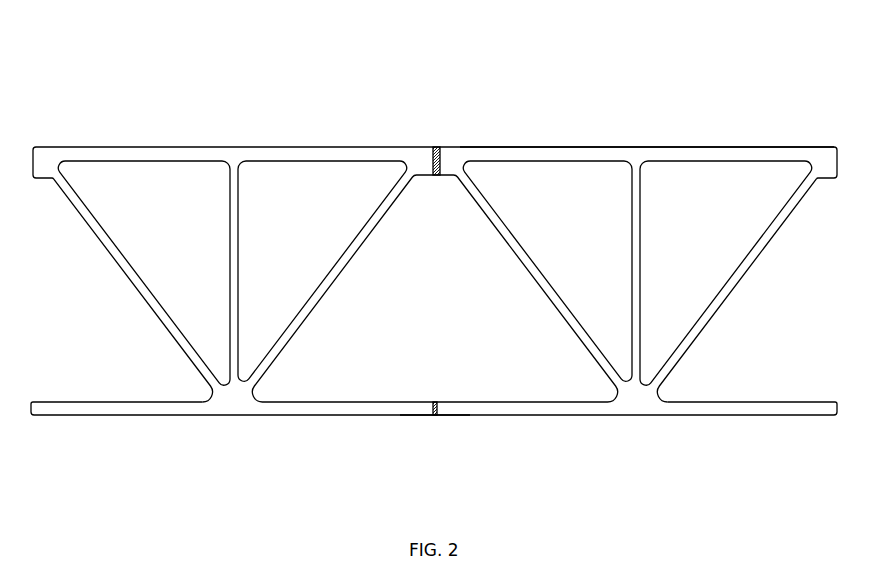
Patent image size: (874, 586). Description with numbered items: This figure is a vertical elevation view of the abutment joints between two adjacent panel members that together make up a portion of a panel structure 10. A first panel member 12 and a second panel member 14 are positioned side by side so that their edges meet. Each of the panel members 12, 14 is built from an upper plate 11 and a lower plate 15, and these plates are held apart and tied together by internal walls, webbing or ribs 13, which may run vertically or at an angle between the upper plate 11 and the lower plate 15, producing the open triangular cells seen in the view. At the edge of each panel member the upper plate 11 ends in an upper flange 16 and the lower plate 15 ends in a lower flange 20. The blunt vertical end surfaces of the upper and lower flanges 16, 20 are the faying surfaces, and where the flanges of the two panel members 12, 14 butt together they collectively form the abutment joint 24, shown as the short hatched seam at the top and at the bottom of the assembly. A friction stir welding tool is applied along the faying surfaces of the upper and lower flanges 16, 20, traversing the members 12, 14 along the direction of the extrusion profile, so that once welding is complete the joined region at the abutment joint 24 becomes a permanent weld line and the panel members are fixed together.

The truss 10 is at (687, 51).
The upper plate 11 is at (573, 147).
The first panel member 12 is at (173, 147).
The internal webbing 13 is at (727, 295).
The second panel member 14 is at (743, 145).
The lower plate 15 is at (565, 407).
The upper flange 16 is at (418, 157).
The lower flange 20 is at (421, 414).
The abutment joint 24 is at (436, 150).